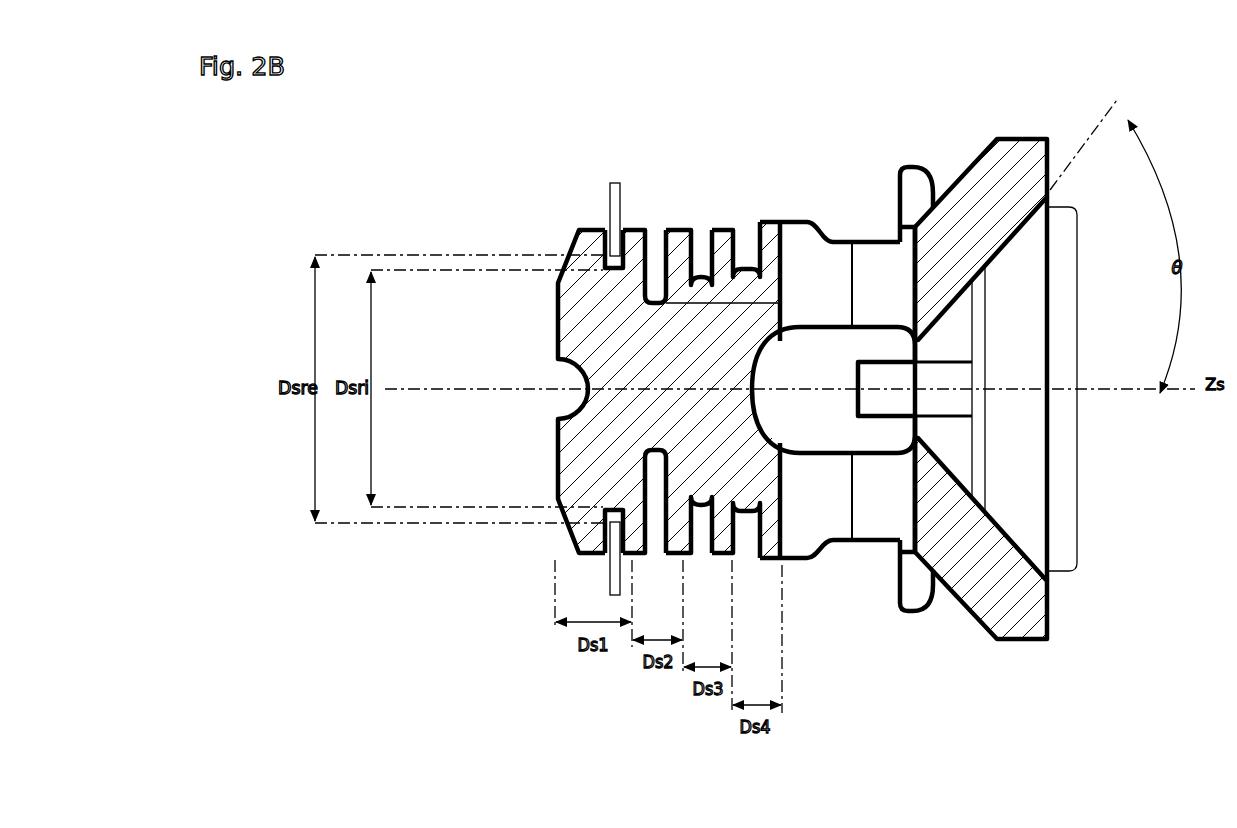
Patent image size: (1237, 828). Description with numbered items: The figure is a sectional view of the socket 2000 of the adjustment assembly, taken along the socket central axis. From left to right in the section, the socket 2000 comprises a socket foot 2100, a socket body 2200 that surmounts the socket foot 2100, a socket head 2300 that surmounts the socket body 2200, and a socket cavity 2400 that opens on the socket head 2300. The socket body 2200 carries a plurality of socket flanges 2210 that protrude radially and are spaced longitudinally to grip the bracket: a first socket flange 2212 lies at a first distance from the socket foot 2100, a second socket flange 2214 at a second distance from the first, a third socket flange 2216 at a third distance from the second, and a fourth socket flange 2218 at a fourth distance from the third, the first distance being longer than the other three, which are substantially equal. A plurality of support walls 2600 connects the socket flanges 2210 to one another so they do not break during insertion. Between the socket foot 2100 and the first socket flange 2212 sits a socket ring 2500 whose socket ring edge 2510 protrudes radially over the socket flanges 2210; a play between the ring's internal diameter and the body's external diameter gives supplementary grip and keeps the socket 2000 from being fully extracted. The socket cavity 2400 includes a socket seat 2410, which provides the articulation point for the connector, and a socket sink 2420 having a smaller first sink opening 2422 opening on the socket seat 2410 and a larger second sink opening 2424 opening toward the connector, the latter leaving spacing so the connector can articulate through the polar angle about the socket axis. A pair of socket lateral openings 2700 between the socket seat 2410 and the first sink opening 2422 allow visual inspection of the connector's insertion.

The socket 2000 is at (402, 124).
The socket foot 2100 is at (540, 293).
The socket body 2200 is at (878, 127).
The plurality of socket flanges 2210 is at (705, 120).
The first socket flange 2212 is at (637, 226).
The second socket flange 2214 is at (685, 226).
The third socket flange 2216 is at (732, 226).
The fourth socket flange 2218 is at (780, 220).
The socket head 2300 is at (1037, 127).
The socket cavity 2400 is at (1083, 463).
The socket seat 2410 is at (779, 445).
The socket sink 2420 is at (985, 480).
The first sink opening 2422 is at (917, 442).
The second sink opening 2424 is at (1046, 578).
The socket ring 2500 is at (612, 173).
The socket ring edge 2510 is at (608, 184).
The plurality of support walls 2600 is at (767, 459).
The pair of socket lateral openings 2700 is at (787, 396).